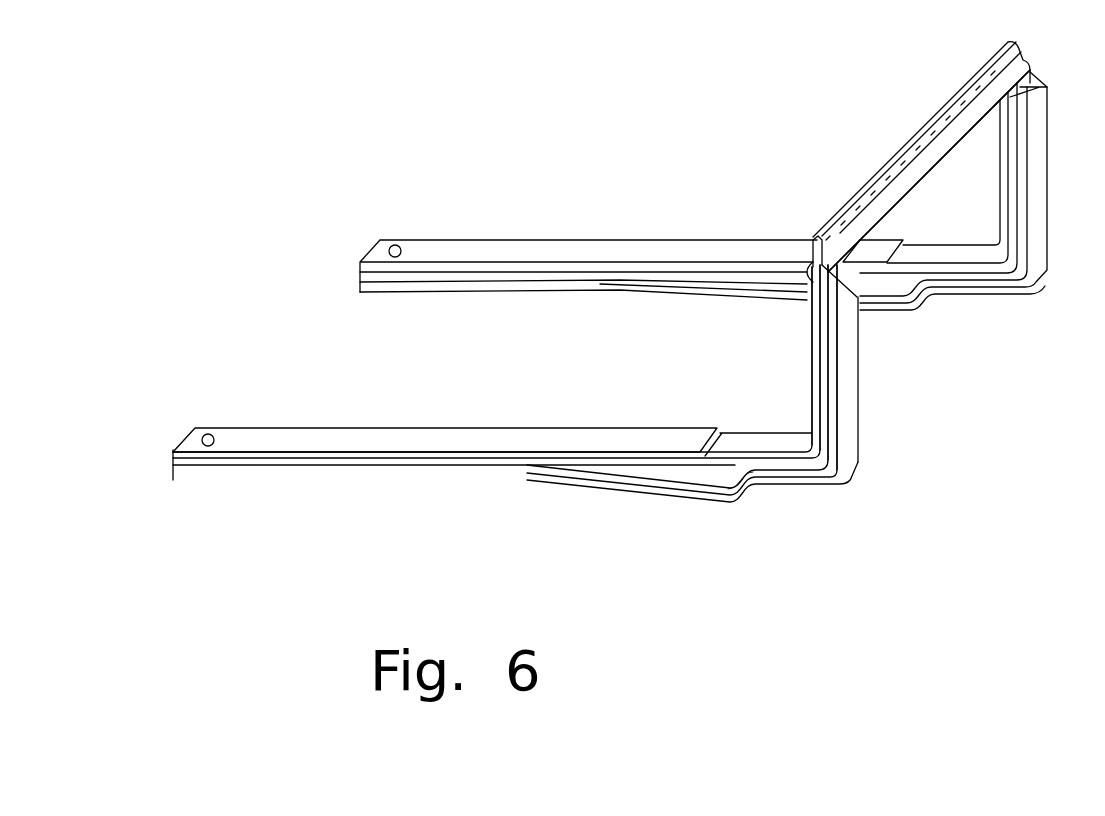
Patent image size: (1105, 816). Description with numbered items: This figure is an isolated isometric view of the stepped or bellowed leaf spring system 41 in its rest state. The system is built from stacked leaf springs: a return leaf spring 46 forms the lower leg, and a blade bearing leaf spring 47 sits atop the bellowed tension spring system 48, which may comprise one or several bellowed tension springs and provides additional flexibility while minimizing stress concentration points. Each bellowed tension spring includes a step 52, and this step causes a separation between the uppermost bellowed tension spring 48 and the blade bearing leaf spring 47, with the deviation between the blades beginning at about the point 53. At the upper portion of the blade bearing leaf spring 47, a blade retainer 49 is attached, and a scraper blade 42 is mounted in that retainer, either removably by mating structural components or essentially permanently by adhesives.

The stepped or bellowed leaf spring system 41 is at (515, 431).
The scraper blade 42 is at (885, 142).
The return leaf spring 46 is at (383, 440).
The blade bearing leaf spring 47 is at (782, 437).
The bellowed tension spring system 48 is at (843, 458).
The blade retainer 49 is at (897, 201).
The step 52 is at (748, 482).
The deviation point 53 is at (527, 473).